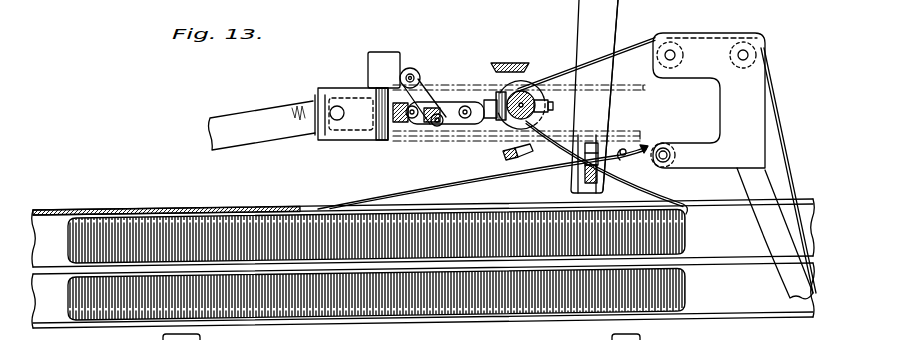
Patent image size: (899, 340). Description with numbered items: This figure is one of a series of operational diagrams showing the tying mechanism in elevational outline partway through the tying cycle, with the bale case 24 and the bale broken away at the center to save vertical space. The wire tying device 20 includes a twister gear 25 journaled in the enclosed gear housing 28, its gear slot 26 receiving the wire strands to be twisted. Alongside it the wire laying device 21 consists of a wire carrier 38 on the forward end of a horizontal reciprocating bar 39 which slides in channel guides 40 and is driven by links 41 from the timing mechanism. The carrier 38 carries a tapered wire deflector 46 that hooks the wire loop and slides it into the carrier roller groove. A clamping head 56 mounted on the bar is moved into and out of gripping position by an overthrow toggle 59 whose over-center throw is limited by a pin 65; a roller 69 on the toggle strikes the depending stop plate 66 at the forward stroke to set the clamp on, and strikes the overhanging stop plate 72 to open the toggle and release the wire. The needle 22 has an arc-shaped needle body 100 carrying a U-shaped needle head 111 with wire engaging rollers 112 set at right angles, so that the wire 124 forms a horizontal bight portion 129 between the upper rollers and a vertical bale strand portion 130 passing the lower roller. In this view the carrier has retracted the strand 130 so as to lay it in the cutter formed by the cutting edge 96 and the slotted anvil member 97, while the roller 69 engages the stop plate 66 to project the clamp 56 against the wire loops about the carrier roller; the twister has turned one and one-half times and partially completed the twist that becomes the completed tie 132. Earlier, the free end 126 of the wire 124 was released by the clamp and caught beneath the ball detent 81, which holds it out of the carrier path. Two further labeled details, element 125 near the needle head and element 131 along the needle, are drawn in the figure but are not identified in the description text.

The wire tying device 20 is at (622, 95).
The wire laying device 21 is at (519, 103).
The needle 22 is at (787, 170).
The bale case 24 is at (183, 208).
The twister gear 25 is at (590, 183).
The gear slot 26 is at (592, 143).
The gear housing 28 is at (578, 12).
The wire carrier 38 is at (536, 98).
The reciprocating bar 39 is at (358, 122).
The channel guides 40 is at (318, 88).
The links 41 is at (243, 137).
The wire deflector 46 is at (478, 116).
The clamping head 56 is at (502, 92).
The overthrow toggle 59 is at (432, 93).
The pin 65 is at (428, 127).
The stop plate 66 is at (385, 52).
The roller 69 is at (412, 68).
The stop plate 72 is at (508, 63).
The ball detent 81 is at (625, 149).
The cutting edge 96 is at (523, 158).
The anvil member 97 is at (503, 154).
The needle body 100 is at (765, 223).
The needle head 111 is at (708, 100).
The wire engaging rollers 112 is at (690, 33).
The wire 124 is at (380, 200).
The pin 125 is at (625, 155).
The free end of wire 126 is at (648, 146).
The bight portion 129 is at (720, 36).
The vertical bale strand portion 130 is at (560, 168).
The lever edge 131 is at (786, 129).
The completed twist or tie 132 is at (603, 188).